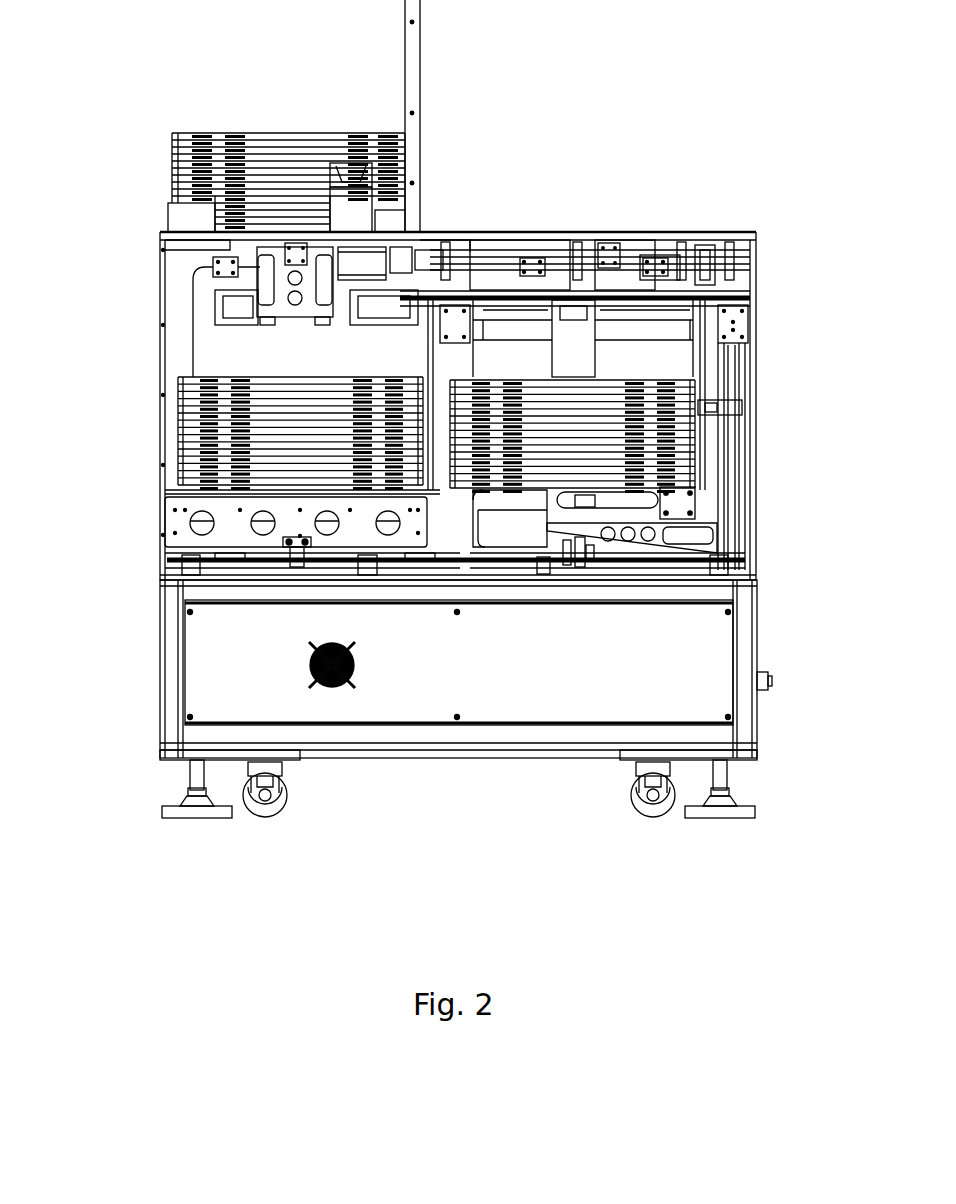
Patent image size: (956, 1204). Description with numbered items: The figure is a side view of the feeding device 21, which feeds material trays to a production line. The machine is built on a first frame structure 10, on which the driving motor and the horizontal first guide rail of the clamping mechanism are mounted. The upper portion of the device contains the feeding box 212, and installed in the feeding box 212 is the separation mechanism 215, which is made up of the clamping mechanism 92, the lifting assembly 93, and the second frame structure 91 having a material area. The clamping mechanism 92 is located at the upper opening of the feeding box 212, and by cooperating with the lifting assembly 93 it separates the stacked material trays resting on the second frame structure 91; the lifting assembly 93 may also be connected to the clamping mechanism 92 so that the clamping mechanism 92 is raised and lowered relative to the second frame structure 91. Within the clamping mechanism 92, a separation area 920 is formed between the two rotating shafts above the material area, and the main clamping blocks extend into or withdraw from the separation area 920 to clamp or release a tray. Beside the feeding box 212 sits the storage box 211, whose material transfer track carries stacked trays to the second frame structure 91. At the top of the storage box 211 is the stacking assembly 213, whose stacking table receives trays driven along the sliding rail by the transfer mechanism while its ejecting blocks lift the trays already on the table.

The feeding device 21 is at (133, 48).
The stacking assembly 213 is at (285, 173).
The feeding box 212 is at (520, 385).
The storage box 211 is at (302, 445).
The separation area 920 is at (617, 243).
The separation mechanism 215 is at (700, 884).
The second frame structure 91 is at (592, 530).
The clamping mechanism 92 is at (643, 265).
The lifting assembly 93 is at (725, 495).
The first frame structure 10 is at (437, 702).